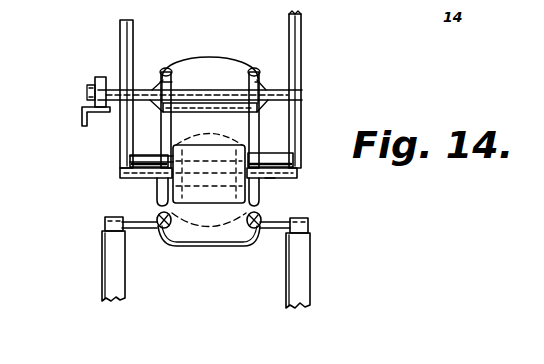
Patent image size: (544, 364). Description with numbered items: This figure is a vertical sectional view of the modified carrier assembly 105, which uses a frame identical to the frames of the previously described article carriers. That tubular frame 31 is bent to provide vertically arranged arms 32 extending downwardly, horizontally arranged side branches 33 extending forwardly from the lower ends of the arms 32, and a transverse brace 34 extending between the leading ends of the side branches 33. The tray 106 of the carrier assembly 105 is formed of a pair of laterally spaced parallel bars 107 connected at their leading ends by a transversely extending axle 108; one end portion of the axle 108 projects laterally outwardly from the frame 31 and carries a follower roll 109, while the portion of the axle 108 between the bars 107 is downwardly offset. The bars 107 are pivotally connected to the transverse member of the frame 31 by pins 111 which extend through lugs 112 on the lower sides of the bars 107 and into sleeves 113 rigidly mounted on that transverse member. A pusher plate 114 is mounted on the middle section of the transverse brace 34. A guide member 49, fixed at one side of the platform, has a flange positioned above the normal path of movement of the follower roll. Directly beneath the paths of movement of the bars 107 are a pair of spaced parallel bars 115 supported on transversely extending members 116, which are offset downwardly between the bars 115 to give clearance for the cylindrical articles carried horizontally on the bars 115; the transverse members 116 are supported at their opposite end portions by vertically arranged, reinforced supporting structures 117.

The tubular frame 31 is at (117, 135).
The vertically arranged arms 32 is at (137, 38).
The side branches 33 is at (120, 171).
The transverse brace 34 is at (270, 180).
The guide member 49 is at (82, 110).
The carrier assembly 105 is at (309, 29).
The tray 106 is at (269, 122).
The parallel bars 107 is at (172, 74).
The axle 108 is at (275, 92).
The follower roll 109 is at (100, 77).
The pins 111 is at (246, 162).
The lugs 112 is at (165, 168).
The sleeves 113 is at (138, 153).
The pusher plate 114 is at (211, 199).
The spaced parallel bars 115 is at (162, 232).
The transversely extending members 116 is at (201, 249).
The supporting structures 117 is at (104, 268).